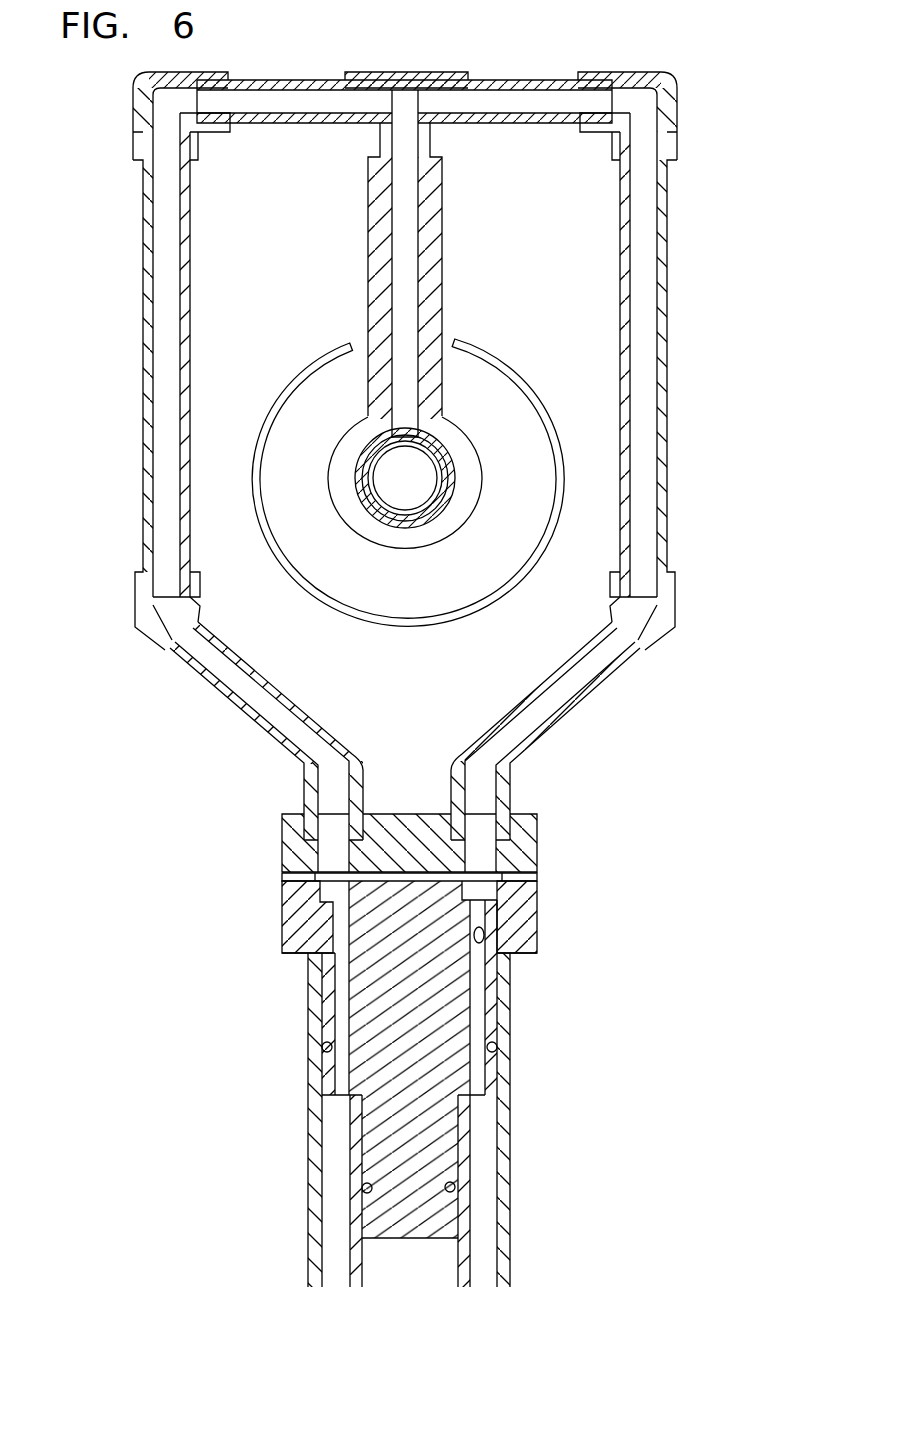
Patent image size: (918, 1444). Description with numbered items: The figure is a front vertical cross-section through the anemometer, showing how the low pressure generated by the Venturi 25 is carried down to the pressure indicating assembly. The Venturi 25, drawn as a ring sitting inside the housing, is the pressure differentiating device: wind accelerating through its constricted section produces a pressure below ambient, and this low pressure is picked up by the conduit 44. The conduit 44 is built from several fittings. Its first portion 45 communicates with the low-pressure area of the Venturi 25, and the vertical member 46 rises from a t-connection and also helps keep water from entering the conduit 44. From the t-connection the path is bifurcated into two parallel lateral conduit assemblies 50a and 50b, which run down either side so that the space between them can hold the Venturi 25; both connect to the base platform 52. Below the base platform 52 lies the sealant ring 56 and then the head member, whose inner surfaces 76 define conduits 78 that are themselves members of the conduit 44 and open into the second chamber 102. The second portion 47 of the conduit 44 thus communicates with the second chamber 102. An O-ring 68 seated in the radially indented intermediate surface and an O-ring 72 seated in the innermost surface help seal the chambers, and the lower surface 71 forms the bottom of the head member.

The Venturi 25 is at (410, 625).
The conduit 44 is at (410, 248).
The first portion 45 is at (430, 397).
The vertical member 46 is at (437, 268).
The second portion 47 is at (340, 1077).
The lateral conduit assembly 50a is at (145, 237).
The lateral conduit assembly 50b is at (667, 238).
The base platform 52 is at (525, 843).
The sealant ring 56 is at (535, 877).
The O-ring 68 is at (493, 1048).
The lower surface 71 is at (423, 1238).
The O-ring 72 is at (460, 1178).
The inner surfaces 76 is at (484, 935).
The conduits 78 is at (478, 912).
The second chamber 102 is at (483, 1230).